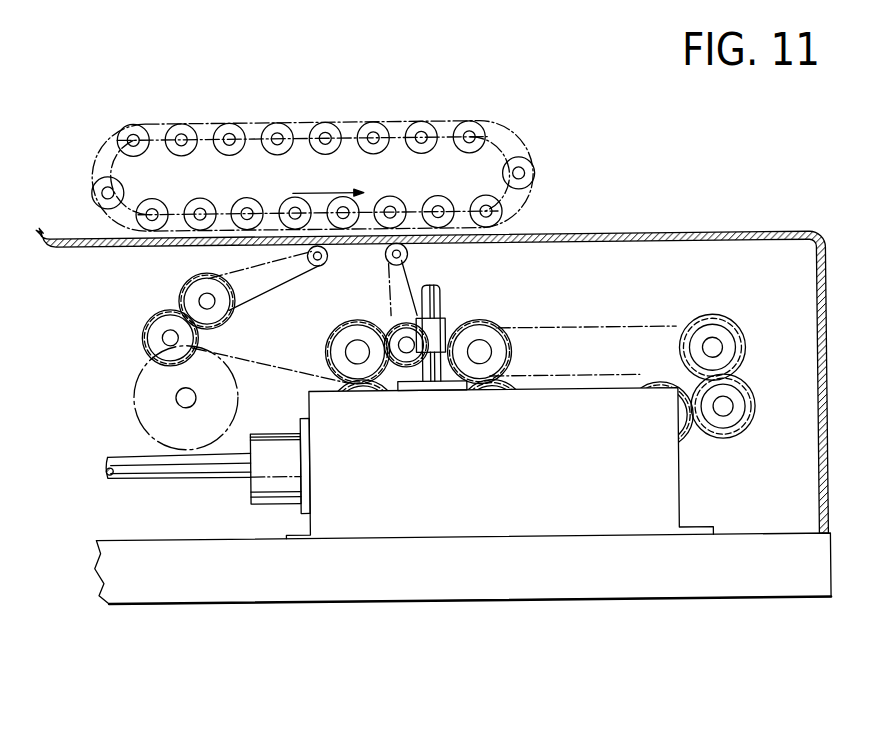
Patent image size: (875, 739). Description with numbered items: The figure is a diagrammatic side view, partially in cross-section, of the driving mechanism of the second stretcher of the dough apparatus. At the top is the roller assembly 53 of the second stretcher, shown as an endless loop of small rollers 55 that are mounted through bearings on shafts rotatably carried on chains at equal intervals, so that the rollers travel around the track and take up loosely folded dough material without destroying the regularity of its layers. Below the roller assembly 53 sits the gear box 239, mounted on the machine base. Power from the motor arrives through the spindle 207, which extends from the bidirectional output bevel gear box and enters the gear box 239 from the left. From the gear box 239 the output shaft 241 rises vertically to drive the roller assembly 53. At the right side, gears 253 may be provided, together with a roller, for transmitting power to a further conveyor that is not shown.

The roller assembly 53 is at (312, 142).
The small rollers 55 is at (184, 132).
The output shaft 241 is at (441, 297).
The gears 253 is at (815, 347).
The gear box 239 is at (518, 478).
The spindle 207 is at (180, 463).